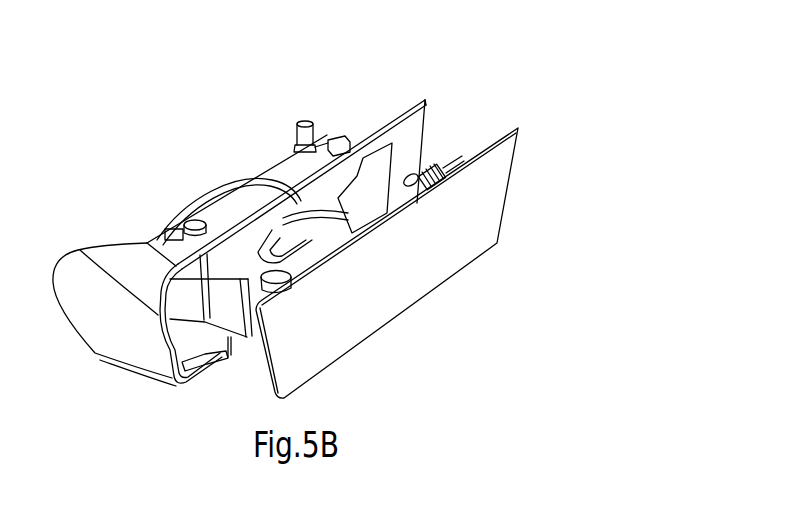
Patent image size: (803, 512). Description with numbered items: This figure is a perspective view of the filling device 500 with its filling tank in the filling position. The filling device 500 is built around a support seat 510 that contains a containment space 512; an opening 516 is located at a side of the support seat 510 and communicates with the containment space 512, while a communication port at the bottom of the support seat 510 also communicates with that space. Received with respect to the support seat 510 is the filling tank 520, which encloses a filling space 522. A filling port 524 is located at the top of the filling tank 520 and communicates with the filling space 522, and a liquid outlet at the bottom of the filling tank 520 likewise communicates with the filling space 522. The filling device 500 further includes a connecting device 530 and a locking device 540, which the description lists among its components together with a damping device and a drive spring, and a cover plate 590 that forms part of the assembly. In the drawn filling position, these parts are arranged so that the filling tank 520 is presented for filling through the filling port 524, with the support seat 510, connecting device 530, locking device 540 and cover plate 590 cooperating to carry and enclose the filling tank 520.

The filling device 500 is at (626, 172).
The support seat 510 is at (301, 224).
The containment space 512 is at (373, 201).
The opening 516 is at (382, 200).
The filling tank 520 is at (213, 252).
The filling space 522 is at (258, 270).
The filling port 524 is at (342, 147).
The connecting device 530 is at (229, 365).
The locking device 540 is at (303, 121).
The cover plate 590 is at (422, 278).